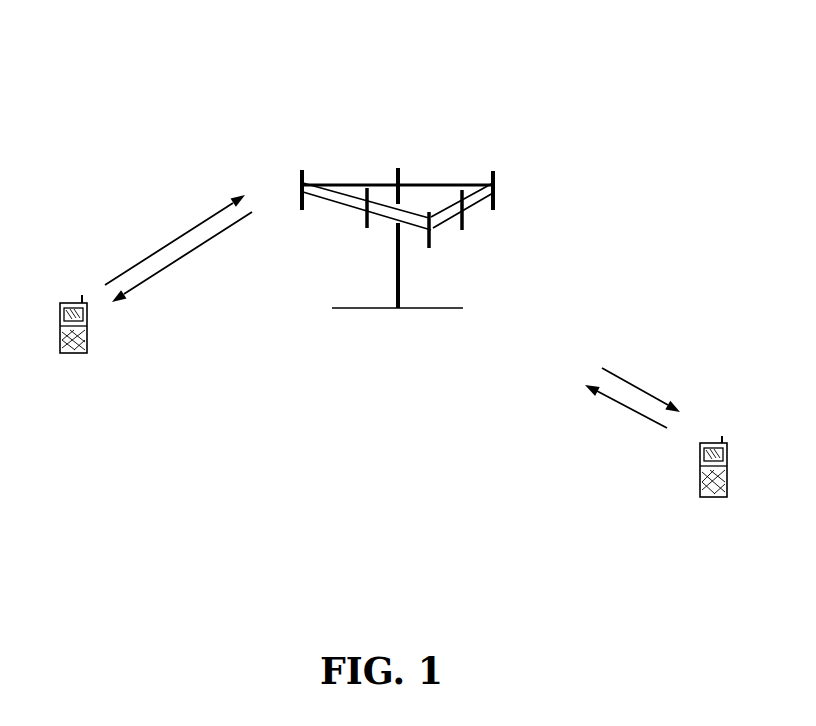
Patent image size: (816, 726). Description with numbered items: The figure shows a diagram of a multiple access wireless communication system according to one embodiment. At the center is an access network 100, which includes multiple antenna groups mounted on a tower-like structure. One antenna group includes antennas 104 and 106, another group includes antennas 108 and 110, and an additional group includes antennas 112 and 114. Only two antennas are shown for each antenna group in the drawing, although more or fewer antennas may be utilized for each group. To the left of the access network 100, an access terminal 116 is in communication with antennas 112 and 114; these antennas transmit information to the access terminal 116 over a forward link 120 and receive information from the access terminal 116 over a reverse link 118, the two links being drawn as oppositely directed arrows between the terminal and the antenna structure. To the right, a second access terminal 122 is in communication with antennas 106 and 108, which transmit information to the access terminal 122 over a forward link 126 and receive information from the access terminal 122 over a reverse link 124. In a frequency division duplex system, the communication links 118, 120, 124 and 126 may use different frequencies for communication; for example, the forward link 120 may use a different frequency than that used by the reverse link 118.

The access network 100 is at (378, 308).
The antenna 104 is at (429, 247).
The antenna 106 is at (463, 228).
The antenna 108 is at (497, 203).
The antenna 110 is at (400, 170).
The antenna 112 is at (305, 181).
The antenna 114 is at (367, 228).
The access terminal 116 is at (78, 297).
The reverse link 118 is at (175, 240).
The forward link 120 is at (188, 255).
The access terminal 122 is at (713, 436).
The reverse link 124 is at (613, 400).
The forward link 126 is at (645, 392).